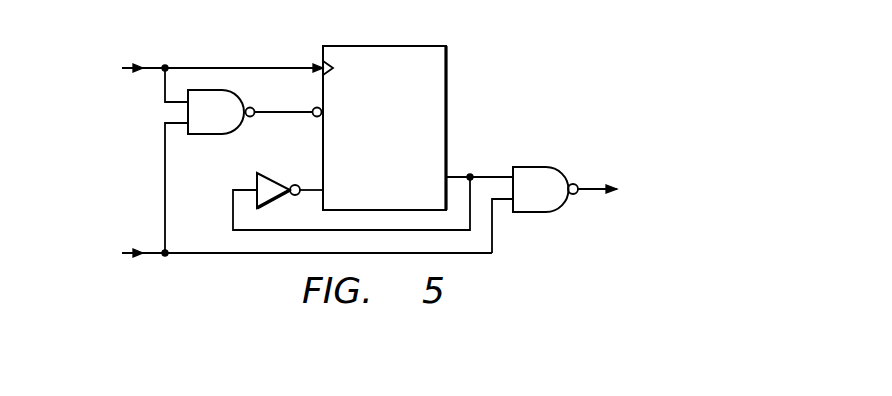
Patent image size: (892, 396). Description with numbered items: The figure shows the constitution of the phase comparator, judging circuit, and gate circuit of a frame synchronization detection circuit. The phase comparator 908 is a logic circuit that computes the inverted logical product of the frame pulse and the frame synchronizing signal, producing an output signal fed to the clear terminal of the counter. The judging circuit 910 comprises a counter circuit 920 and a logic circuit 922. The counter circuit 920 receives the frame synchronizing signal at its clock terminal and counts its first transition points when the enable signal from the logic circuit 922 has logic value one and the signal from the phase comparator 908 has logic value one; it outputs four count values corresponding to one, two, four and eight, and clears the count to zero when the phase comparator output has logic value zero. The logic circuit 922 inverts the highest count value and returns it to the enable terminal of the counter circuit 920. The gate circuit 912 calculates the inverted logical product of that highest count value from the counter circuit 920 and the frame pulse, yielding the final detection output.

The judging circuit 910 is at (544, 93).
The phase comparator 908 is at (212, 134).
The counter circuit 920 is at (447, 97).
The logic circuit 922 is at (277, 180).
The gate circuit 912 is at (537, 212).